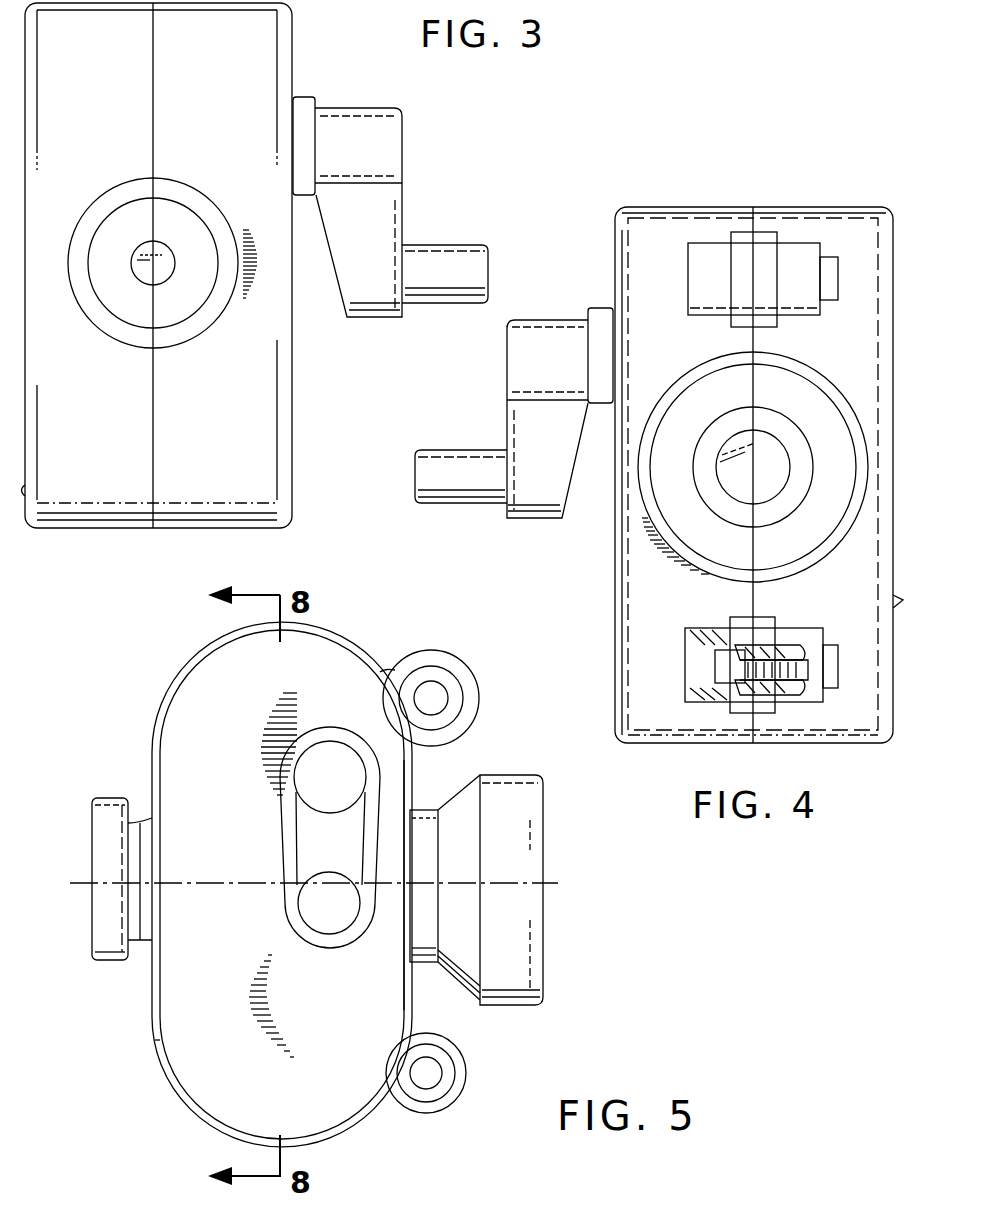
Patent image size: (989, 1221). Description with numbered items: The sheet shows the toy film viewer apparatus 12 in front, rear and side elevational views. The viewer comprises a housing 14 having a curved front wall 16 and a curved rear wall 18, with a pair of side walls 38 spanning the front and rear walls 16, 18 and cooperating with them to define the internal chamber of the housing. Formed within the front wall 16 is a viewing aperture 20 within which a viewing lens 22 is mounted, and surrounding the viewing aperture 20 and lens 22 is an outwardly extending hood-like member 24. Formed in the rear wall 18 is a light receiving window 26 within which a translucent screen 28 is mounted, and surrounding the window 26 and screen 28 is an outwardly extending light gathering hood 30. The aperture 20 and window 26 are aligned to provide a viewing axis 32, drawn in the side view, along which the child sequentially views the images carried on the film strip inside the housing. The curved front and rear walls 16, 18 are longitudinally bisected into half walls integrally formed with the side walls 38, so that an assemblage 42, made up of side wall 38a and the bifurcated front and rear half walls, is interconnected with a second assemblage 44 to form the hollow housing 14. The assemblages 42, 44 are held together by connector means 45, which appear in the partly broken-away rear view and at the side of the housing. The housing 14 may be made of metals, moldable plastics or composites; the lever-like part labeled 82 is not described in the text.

In FIG. 3, the toy film viewer apparatus 12 is at (315, 70).
In FIG. 4, the toy film viewer apparatus 12 is at (782, 158).
In FIG. 5, the toy film viewer apparatus 12 is at (145, 665).
In FIG. 3, the housing 14 is at (300, 25).
In FIG. 4, the housing 14 is at (719, 195).
In FIG. 5, the housing 14 is at (368, 632).
In FIG. 3, the front wall 16 is at (270, 437).
In FIG. 5, the front wall 16 is at (150, 735).
In FIG. 4, the rear wall 18 is at (650, 641).
In FIG. 5, the rear wall 18 is at (404, 776).
In FIG. 3, the viewing aperture 20 is at (163, 280).
In FIG. 3, the viewing lens 22 is at (146, 258).
In FIG. 3, the hood-like member 24 is at (115, 342).
In FIG. 5, the hood-like member 24 is at (105, 960).
In FIG. 4, the light receiving window 26 is at (788, 496).
In FIG. 4, the translucent screen 28 is at (764, 428).
In FIG. 4, the light gathering hood 30 is at (690, 376).
In FIG. 5, the light gathering hood 30 is at (543, 943).
In FIG. 5, the viewing axis 32 is at (231, 884).
In FIG. 3, the side walls 38 is at (296, 398).
In FIG. 4, the side walls 38 is at (615, 566).
In FIG. 5, the side walls 38 is at (222, 1099).
In FIG. 5, the side wall 38a is at (177, 1057).
In FIG. 3, the assemblage 42 is at (192, 497).
In FIG. 4, the assemblage 42 is at (660, 217).
In FIG. 3, the assemblage 44 is at (107, 503).
In FIG. 4, the assemblage 44 is at (845, 217).
In FIG. 4, the connector means 45 is at (805, 314).
In FIG. 5, the connector means 45 is at (478, 712).
In FIG. 3, the actuator lever 82 is at (415, 152).
In FIG. 4, the actuator lever 82 is at (564, 318).
In FIG. 5, the actuator lever 82 is at (310, 832).